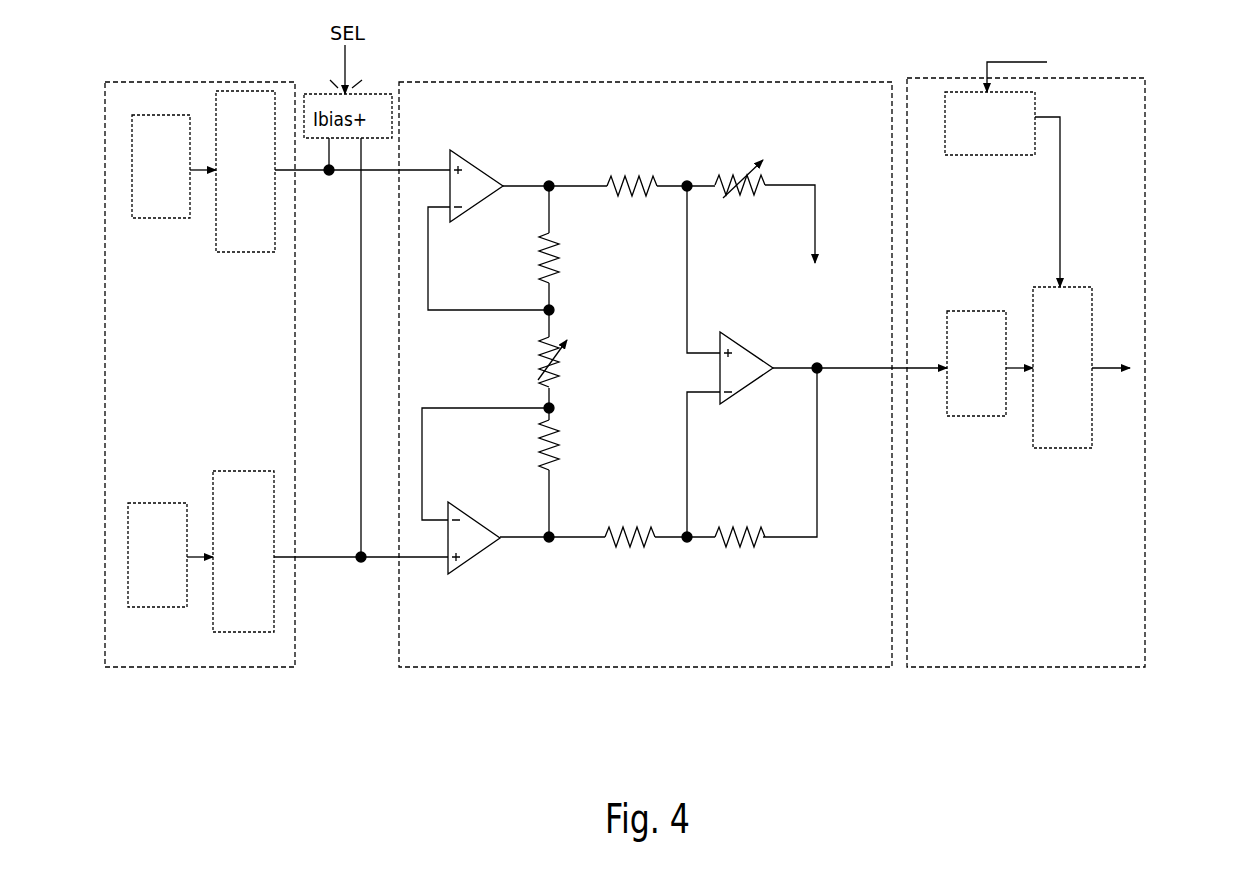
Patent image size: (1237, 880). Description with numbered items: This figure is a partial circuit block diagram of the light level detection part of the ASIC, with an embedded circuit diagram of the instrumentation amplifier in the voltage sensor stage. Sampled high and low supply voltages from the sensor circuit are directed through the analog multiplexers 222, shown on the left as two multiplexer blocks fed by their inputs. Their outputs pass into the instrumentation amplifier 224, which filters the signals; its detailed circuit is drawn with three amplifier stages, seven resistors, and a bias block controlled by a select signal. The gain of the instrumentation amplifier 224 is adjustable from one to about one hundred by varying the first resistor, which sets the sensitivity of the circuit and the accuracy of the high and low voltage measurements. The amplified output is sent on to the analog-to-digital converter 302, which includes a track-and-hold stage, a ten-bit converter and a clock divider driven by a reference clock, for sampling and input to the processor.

The analog multiplexers 222 is at (240, 471).
The instrumentation amplifier 224 is at (605, 668).
The analog-to-digital converter 302 is at (948, 668).